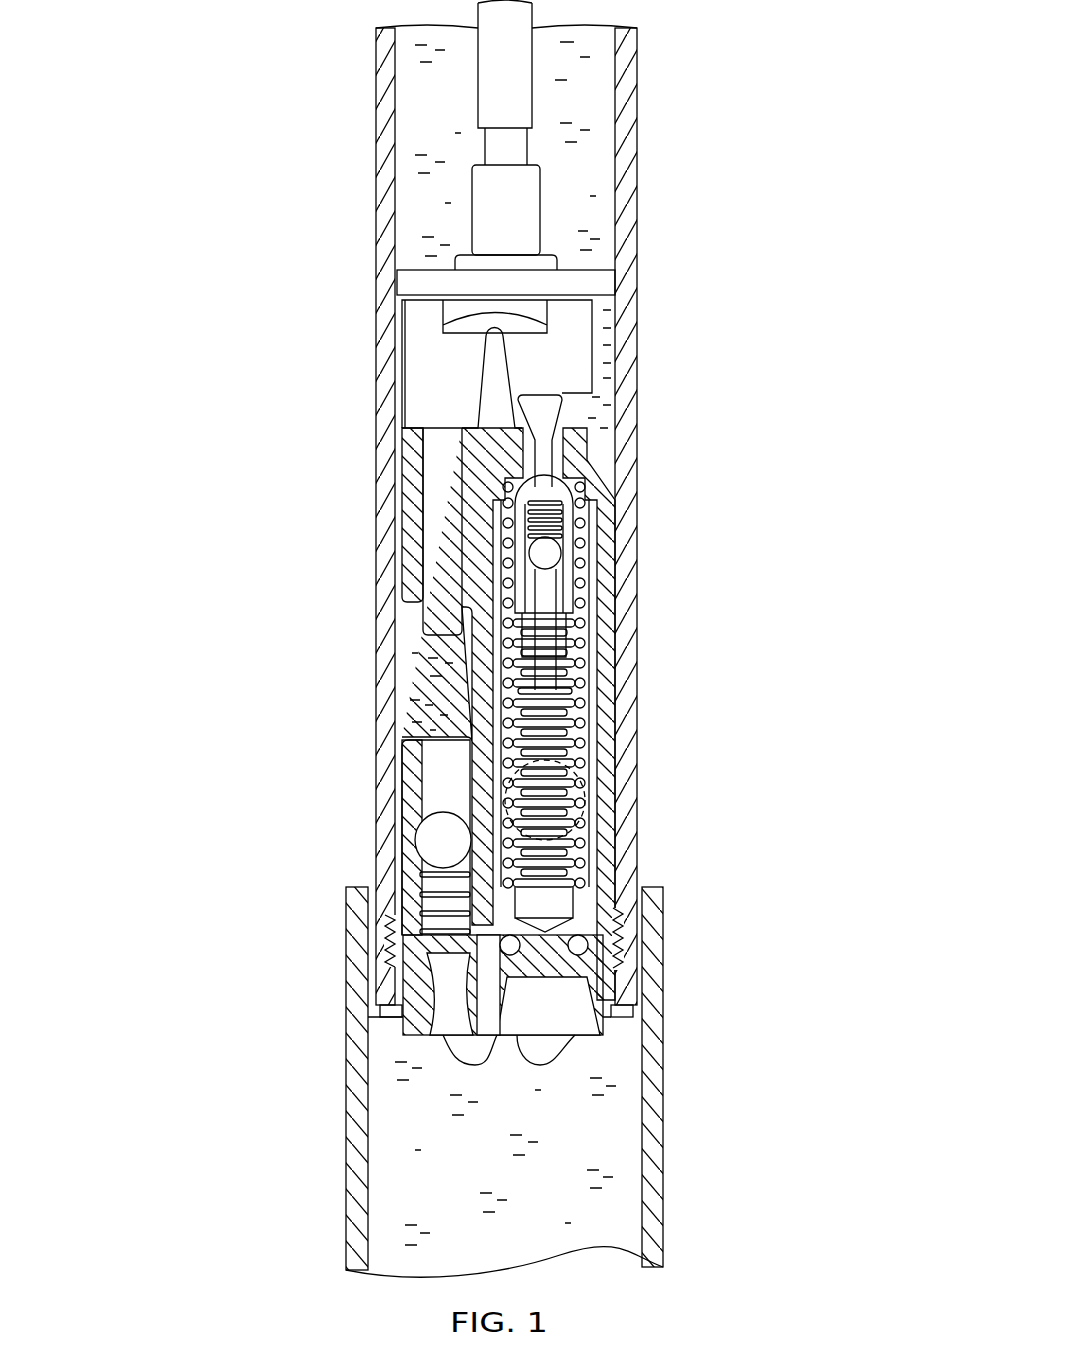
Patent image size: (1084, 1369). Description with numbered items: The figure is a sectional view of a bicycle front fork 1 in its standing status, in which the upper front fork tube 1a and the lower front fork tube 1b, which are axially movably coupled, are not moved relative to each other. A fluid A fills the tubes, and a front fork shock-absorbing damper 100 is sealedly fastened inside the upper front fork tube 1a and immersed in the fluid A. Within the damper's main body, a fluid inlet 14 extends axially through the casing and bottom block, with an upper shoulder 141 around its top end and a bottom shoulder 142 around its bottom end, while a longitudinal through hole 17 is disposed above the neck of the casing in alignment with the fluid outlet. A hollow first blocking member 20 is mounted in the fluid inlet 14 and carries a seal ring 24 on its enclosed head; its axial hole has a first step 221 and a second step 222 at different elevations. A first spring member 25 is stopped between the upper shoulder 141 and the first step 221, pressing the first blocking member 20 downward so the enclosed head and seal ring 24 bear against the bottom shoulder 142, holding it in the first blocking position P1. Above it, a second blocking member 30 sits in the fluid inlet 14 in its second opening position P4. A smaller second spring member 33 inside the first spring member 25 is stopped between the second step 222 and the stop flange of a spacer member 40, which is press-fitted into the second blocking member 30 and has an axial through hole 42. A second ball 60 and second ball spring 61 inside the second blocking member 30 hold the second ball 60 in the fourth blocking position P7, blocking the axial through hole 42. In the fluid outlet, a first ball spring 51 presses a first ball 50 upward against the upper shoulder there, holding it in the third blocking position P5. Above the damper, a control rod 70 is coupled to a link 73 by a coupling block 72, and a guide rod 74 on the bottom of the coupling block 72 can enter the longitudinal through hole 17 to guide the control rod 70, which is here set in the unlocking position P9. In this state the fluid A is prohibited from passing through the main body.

The front fork 1 is at (247, 903).
The upper front fork tube 1a is at (384, 910).
The lower front fork tube 1b is at (357, 1005).
The fluid inlet 14 is at (590, 690).
The longitudinal through hole 17 is at (412, 598).
The first blocking member 20 is at (588, 797).
The seal ring 24 is at (597, 960).
The first spring member 25 is at (575, 890).
The second blocking member 30 is at (553, 635).
The second spring member 33 is at (585, 940).
The spacer member 40 is at (568, 650).
The axial through hole 42 is at (563, 655).
The first ball 50 is at (430, 840).
The first ball spring 51 is at (418, 895).
The second ball 60 is at (541, 549).
The second ball spring 61 is at (525, 505).
The control rod 70 is at (572, 422).
The coupling block 72 is at (412, 376).
The link 73 is at (490, 78).
The guide rod 74 is at (432, 622).
The front fork shock-absorbing damper 100 is at (398, 456).
The upper shoulder 141 is at (575, 477).
The bottom shoulder 142 is at (622, 1003).
The first step 221 is at (577, 905).
The second step 222 is at (624, 940).
The fluid A is at (410, 1186).
The first blocking position P1 is at (549, 987).
The second opening position P4 is at (586, 510).
The third blocking position P5 is at (414, 811).
The fourth blocking position P7 is at (515, 577).
The unlocking position P9 is at (568, 416).